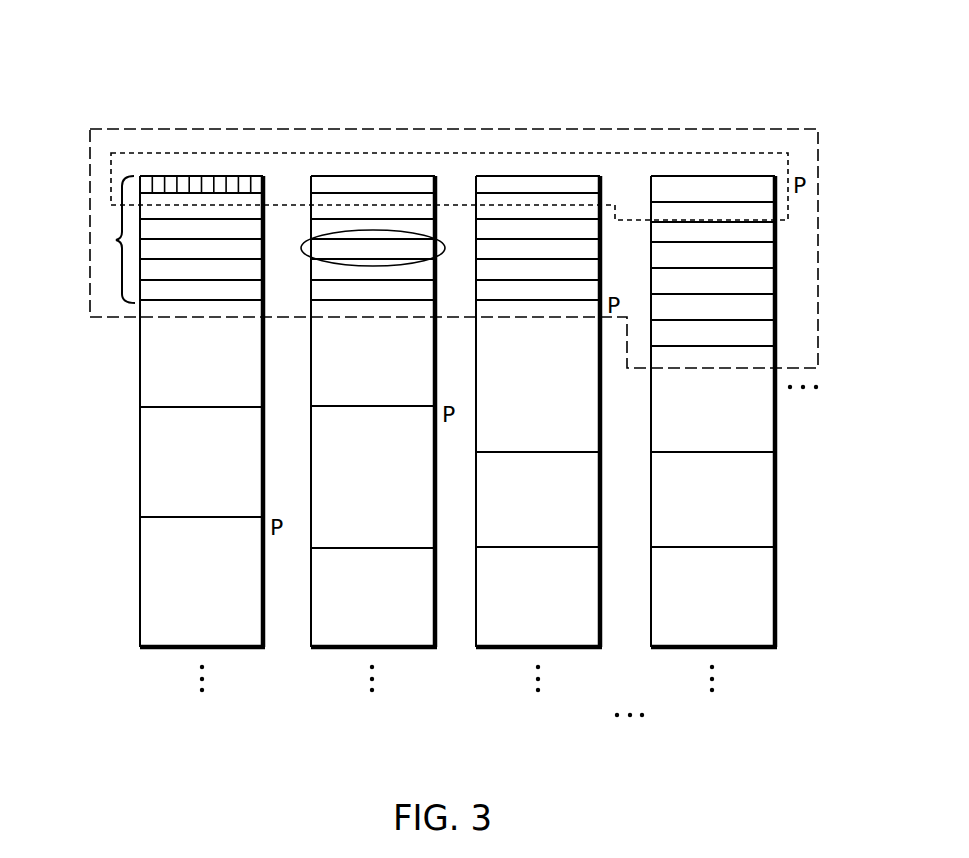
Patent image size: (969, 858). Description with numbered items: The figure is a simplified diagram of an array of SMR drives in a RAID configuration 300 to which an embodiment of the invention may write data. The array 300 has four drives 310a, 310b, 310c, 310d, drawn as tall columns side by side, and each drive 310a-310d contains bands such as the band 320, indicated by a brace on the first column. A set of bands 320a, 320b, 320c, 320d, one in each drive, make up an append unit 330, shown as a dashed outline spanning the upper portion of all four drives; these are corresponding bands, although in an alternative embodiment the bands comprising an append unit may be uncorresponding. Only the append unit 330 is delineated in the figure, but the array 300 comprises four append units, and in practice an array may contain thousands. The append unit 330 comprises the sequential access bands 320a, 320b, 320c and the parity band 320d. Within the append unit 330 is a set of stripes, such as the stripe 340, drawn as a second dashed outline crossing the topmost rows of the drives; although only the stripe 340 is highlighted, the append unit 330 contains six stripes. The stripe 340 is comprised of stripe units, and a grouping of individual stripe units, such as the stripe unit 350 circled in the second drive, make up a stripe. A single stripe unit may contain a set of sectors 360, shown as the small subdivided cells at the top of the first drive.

The array of SMR drives in a RAID configuration 300 is at (156, 70).
The drive 310a is at (202, 453).
The drive 310b is at (374, 453).
The drive 310c is at (539, 453).
The drive 310d is at (714, 453).
The band 320 is at (120, 227).
The sequential access band 320a is at (203, 300).
The sequential access band 320b is at (375, 300).
The sequential access band 320c is at (540, 300).
The parity band 320d is at (712, 347).
The append unit 330 is at (557, 128).
The stripe 340 is at (713, 152).
The stripe unit 350 is at (302, 233).
The sectors 360 is at (144, 174).